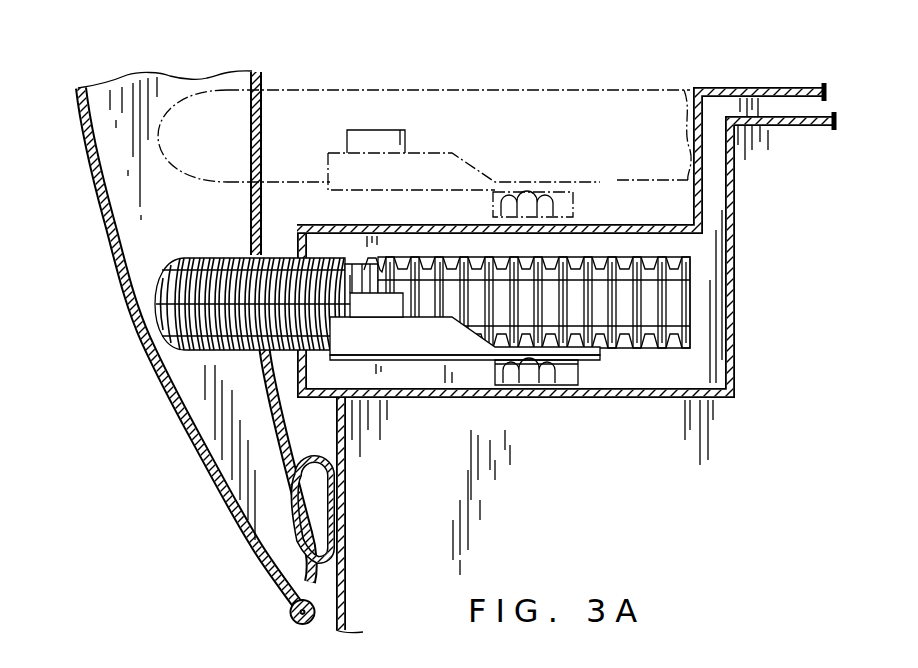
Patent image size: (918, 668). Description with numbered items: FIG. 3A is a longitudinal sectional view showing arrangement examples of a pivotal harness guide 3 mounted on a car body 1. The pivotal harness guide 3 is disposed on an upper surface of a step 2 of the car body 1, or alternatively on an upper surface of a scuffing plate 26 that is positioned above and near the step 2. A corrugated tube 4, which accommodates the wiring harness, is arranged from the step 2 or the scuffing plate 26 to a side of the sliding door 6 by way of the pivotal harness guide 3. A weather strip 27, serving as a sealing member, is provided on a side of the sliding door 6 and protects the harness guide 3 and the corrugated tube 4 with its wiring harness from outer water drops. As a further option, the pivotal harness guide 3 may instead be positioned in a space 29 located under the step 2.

The car body 1 is at (551, 120).
The step 2 is at (640, 398).
The pivotal harness guide 3 is at (420, 115).
The corrugated tube 4 is at (325, 227).
The sliding door 6 is at (105, 260).
The scuffing plate 26 is at (610, 220).
The weather strip 27 is at (290, 467).
The space 29 is at (525, 438).